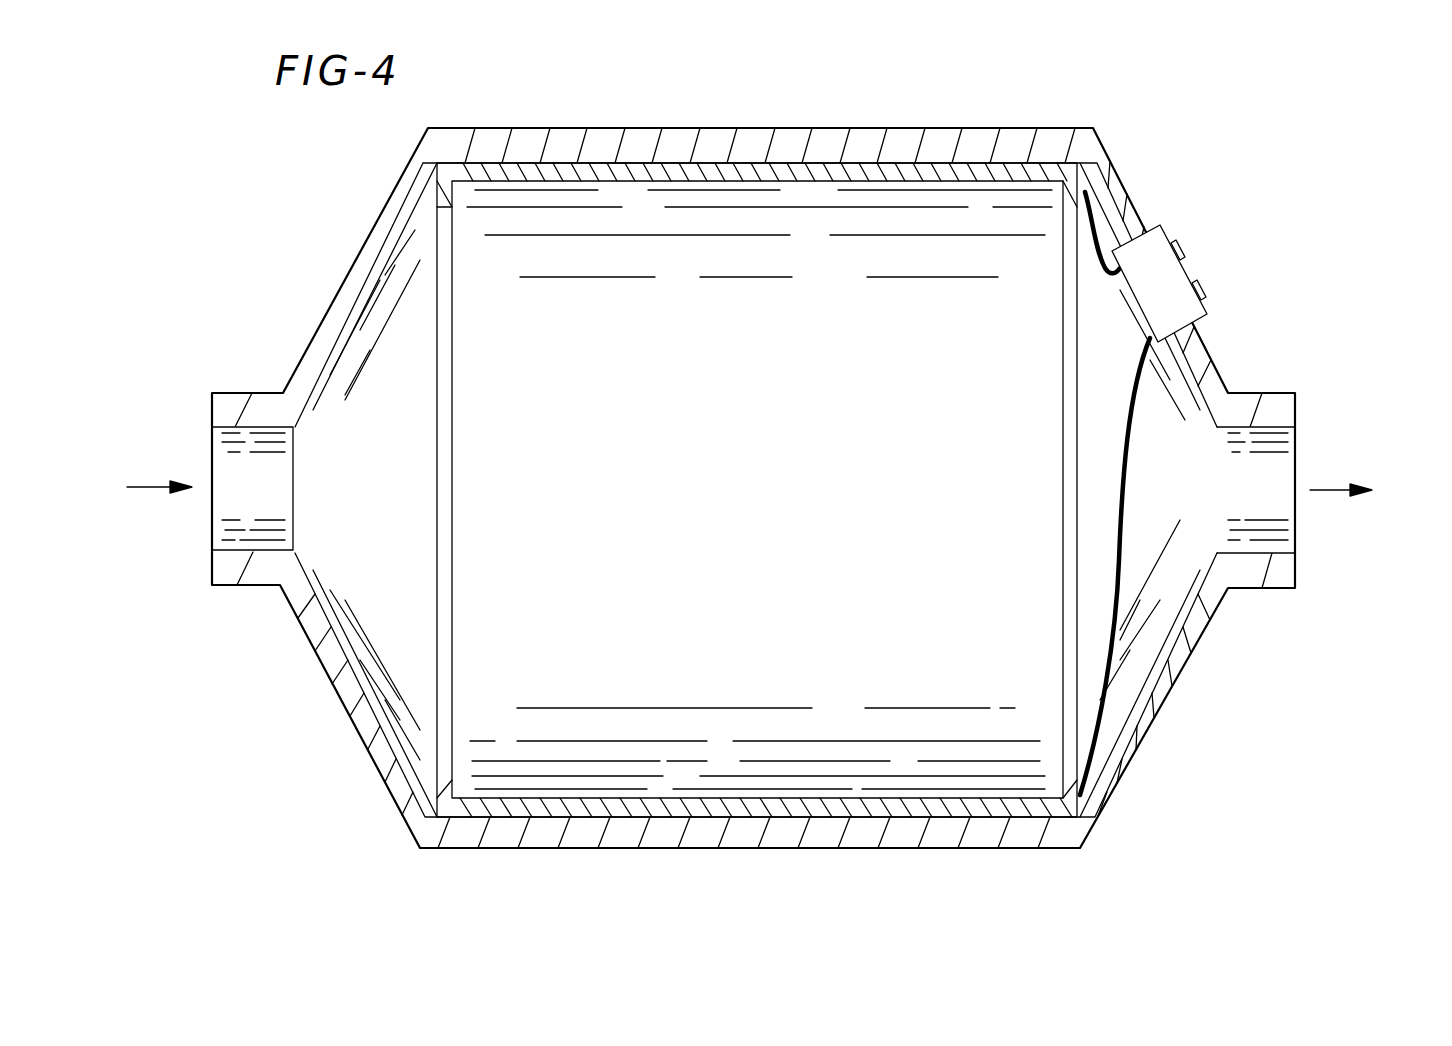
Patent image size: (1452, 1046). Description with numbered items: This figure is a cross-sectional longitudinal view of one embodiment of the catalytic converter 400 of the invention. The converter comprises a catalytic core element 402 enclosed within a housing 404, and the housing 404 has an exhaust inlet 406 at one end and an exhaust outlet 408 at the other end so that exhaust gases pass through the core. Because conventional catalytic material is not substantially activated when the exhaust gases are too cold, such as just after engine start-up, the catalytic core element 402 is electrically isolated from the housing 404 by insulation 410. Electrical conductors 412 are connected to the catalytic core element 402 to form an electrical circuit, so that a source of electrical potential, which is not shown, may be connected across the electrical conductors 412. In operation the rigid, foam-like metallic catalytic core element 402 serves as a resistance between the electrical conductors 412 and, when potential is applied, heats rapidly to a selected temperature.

The catalytic converter 400 is at (340, 251).
The catalytic core element 402 is at (1027, 785).
The housing 404 is at (773, 130).
The exhaust inlet 406 is at (210, 450).
The exhaust outlet 408 is at (1295, 437).
The insulation 410 is at (918, 165).
The electrical conductors 412 is at (1098, 238).